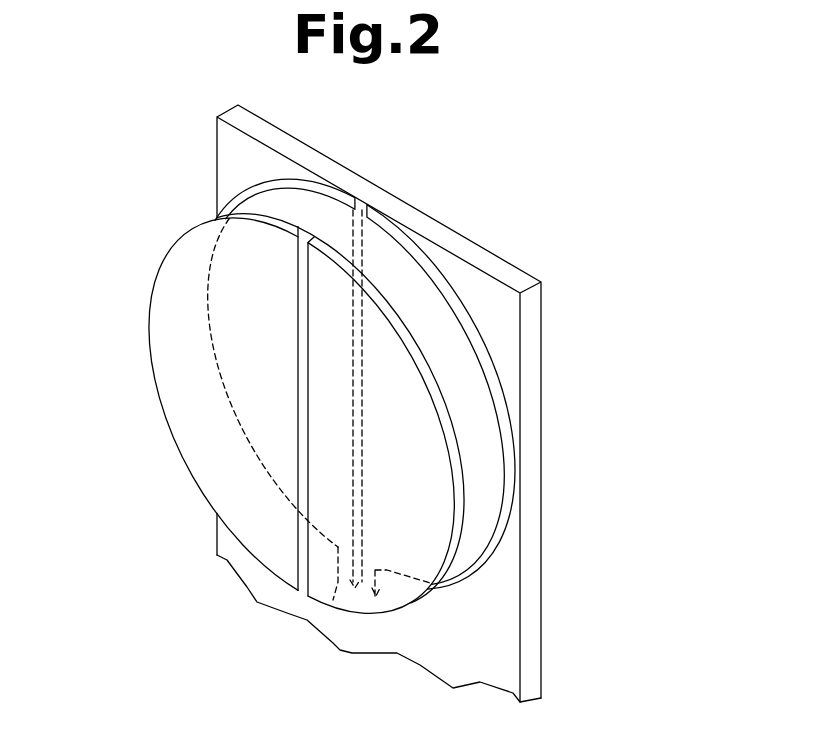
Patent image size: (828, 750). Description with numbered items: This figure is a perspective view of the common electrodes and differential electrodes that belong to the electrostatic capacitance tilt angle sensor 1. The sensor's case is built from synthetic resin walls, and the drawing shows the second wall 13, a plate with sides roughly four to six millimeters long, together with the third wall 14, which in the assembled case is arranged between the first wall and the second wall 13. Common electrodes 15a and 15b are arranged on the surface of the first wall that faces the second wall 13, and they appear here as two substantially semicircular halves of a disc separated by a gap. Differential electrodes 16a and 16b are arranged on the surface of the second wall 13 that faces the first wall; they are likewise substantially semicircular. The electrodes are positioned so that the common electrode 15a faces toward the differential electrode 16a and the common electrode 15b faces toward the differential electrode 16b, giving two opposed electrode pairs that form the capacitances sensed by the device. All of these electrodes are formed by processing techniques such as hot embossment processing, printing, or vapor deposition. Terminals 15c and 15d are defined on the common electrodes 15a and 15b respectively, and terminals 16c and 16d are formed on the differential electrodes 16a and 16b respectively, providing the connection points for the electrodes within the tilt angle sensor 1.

The tilt angle sensor 1 is at (614, 214).
The second wall 13 is at (532, 608).
The third wall 14 is at (344, 412).
The common electrode 15a is at (152, 344).
The common electrode 15b is at (459, 534).
The terminal 15c is at (286, 563).
The terminal 15d is at (307, 604).
The differential electrode 16a is at (317, 188).
The differential electrode 16b is at (497, 372).
The terminal 16c is at (335, 600).
The terminal 16d is at (398, 596).